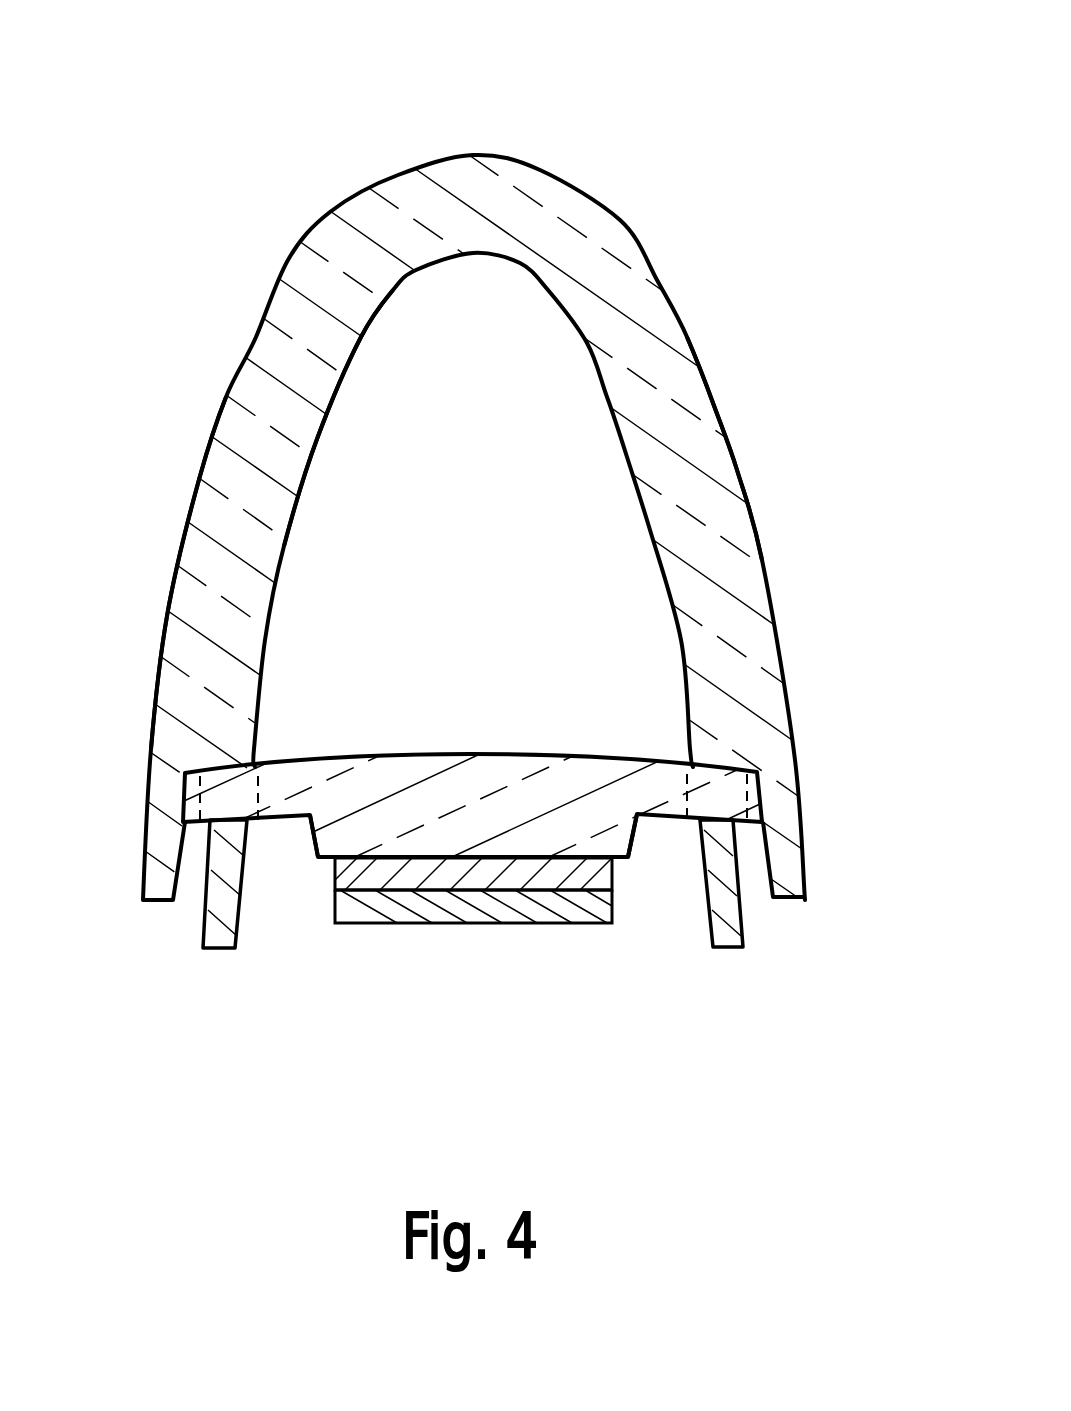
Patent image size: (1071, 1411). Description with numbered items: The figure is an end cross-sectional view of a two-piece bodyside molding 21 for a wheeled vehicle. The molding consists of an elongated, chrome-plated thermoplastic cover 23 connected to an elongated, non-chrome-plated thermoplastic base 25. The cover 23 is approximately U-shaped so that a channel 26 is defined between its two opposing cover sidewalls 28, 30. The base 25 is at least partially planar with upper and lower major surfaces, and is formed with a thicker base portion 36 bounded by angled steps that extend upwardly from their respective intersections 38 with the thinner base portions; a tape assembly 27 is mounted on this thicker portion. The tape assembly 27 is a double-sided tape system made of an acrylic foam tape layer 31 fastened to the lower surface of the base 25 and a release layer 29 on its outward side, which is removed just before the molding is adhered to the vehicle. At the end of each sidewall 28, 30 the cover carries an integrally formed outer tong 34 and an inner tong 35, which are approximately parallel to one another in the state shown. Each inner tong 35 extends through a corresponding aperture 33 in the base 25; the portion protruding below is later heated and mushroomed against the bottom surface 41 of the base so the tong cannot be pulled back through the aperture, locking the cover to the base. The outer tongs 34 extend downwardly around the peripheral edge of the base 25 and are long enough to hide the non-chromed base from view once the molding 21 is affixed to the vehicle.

The bodyside molding 21 is at (667, 93).
The cover 23 is at (667, 362).
The base 25 is at (415, 788).
The channel 26 is at (392, 407).
The tape assembly 27 is at (320, 853).
The cover sidewall 28 is at (237, 462).
The release layer 29 is at (573, 923).
The cover sidewall 30 is at (710, 453).
The tape layer 31 is at (478, 868).
The aperture 33 is at (212, 768).
The outer tong 34 is at (140, 850).
The inner tong 35 is at (200, 917).
The thicker base portion 36 is at (415, 835).
The intersection 38 is at (307, 827).
The bottom surface 41 is at (285, 817).